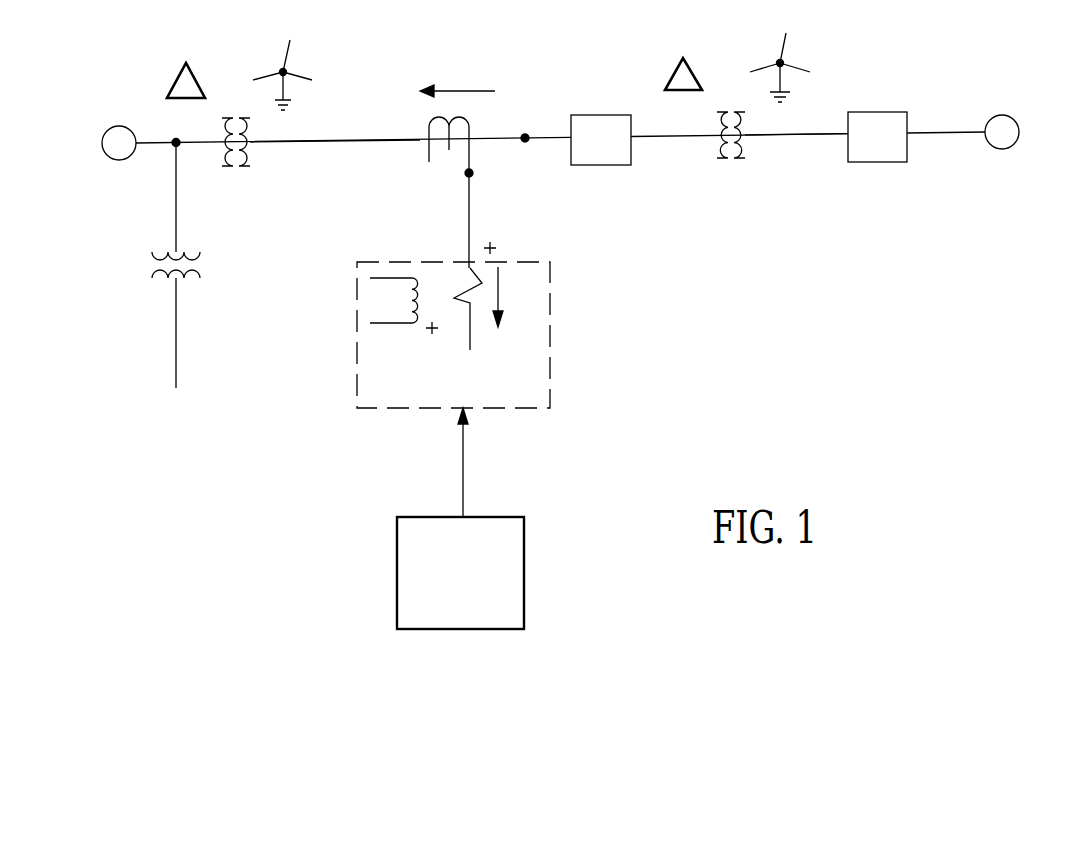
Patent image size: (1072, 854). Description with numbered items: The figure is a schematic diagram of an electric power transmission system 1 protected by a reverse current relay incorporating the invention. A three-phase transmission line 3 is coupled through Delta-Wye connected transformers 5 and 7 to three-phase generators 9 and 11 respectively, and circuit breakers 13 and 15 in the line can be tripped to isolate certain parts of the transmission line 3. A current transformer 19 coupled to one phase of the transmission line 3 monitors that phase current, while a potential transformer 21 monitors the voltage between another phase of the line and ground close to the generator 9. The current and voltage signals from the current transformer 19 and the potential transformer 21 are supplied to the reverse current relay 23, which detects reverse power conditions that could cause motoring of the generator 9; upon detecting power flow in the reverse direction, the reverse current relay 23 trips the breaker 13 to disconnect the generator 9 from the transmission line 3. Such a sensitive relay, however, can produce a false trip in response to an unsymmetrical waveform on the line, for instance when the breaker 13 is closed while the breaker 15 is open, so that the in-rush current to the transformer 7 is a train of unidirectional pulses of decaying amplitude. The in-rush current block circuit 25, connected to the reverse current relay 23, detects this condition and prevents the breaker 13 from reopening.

The electric power transmission system 1 is at (347, 106).
The transmission line 3 is at (278, 142).
The Delta-Wye connected transformer 5 is at (240, 118).
The Delta-Wye connected transformer 7 is at (744, 112).
The three-phase generator 9 is at (125, 127).
The three-phase generator 11 is at (1017, 120).
The circuit breaker 13 is at (600, 165).
The circuit breaker 15 is at (880, 162).
The current transformer 19 is at (412, 128).
The potential transformer 21 is at (153, 268).
The reverse current relay 23 is at (550, 298).
The in-rush current block circuit 25 is at (524, 535).